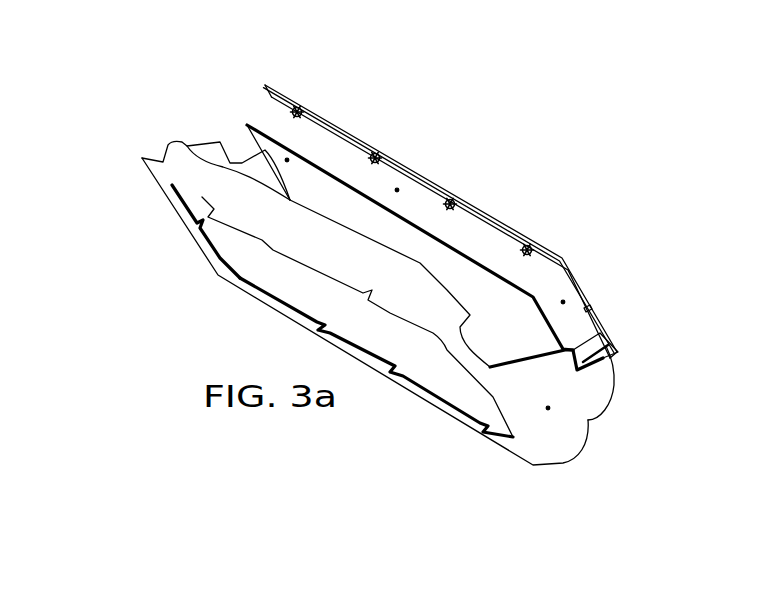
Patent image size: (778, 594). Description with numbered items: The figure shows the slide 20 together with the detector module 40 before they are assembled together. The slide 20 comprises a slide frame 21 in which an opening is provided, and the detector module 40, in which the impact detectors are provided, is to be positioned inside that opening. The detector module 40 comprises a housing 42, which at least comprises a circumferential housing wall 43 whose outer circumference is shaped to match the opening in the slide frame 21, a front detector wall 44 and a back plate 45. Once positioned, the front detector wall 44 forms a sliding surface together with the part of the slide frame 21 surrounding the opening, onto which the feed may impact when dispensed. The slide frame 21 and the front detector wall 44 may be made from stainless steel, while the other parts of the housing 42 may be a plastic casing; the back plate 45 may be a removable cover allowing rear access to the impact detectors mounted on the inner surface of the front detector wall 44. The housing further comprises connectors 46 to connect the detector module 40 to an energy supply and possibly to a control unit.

The slide 20 is at (157, 148).
The slide frame 21 is at (548, 408).
The detector module 40 is at (593, 290).
The housing 42 is at (397, 190).
The circumferential housing wall 43 is at (563, 302).
The front detector wall 44 is at (333, 122).
The back plate 45 is at (287, 160).
The connectors 46 is at (613, 340).